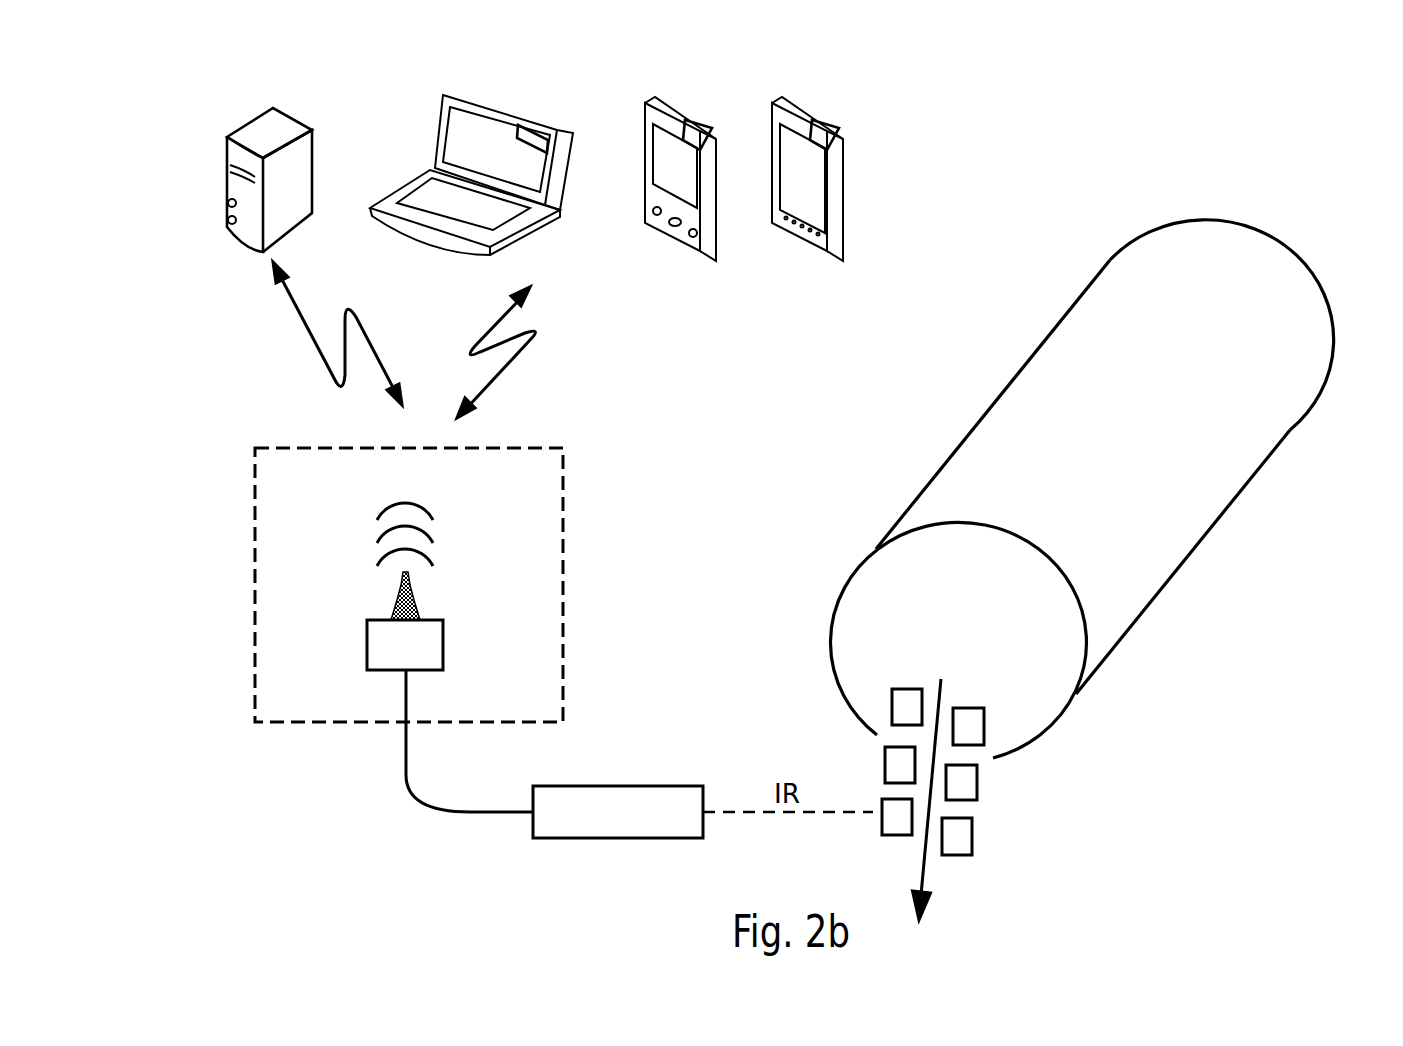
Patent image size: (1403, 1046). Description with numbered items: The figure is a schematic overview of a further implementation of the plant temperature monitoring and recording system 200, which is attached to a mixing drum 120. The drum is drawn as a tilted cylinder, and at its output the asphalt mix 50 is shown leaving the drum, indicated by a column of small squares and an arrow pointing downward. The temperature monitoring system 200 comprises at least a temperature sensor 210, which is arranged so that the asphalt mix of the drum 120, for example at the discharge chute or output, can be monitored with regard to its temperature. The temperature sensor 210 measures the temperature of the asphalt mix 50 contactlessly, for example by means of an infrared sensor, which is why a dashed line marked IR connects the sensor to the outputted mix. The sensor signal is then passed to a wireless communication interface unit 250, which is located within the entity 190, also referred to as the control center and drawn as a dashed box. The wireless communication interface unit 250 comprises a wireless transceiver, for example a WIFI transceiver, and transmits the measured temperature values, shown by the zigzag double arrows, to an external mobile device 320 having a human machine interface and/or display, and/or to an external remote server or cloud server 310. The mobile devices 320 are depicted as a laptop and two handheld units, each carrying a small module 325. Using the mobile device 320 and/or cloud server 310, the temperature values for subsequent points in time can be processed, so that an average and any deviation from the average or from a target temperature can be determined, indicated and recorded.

The remote server 310 is at (275, 128).
The mobile device 320 is at (855, 257).
The wireless communication module 325 is at (531, 140).
The entity 190 is at (255, 587).
The wireless communication interface unit 250 is at (433, 651).
The temperature monitoring system 200 is at (392, 815).
The temperature sensor 210 is at (616, 815).
The mixing drum 120 is at (1253, 436).
The asphalt mix 50 is at (918, 863).